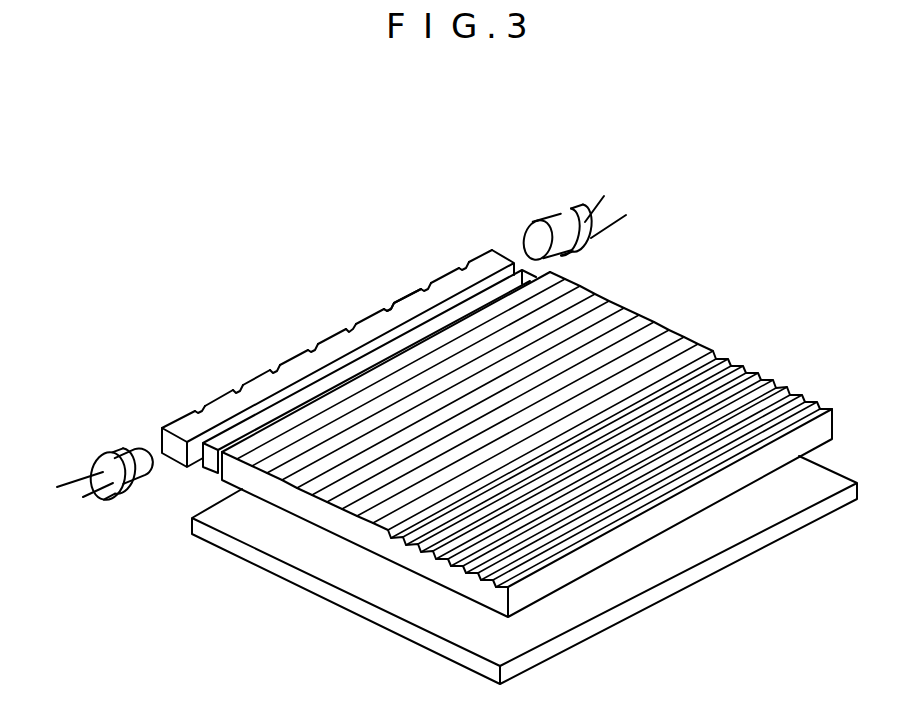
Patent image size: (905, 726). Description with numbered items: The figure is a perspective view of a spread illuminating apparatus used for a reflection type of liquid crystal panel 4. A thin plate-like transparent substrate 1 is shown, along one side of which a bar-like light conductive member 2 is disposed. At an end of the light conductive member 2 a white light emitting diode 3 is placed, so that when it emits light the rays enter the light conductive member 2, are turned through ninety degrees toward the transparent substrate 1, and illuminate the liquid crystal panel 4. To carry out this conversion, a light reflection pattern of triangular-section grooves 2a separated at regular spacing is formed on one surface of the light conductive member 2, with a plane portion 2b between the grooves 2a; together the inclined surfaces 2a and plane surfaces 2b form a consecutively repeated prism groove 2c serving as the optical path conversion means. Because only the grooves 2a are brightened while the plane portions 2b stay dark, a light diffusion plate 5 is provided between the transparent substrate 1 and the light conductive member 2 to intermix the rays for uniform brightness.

The transparent substrate 1 is at (368, 547).
The light conductive member 2 is at (335, 286).
The grooves 2a is at (232, 391).
The plane portion 2b is at (332, 334).
The prism groove 2c is at (435, 190).
The light emitting diode 3 is at (588, 242).
The liquid crystal panel 4 is at (713, 568).
The light diffusion plate 5 is at (207, 462).